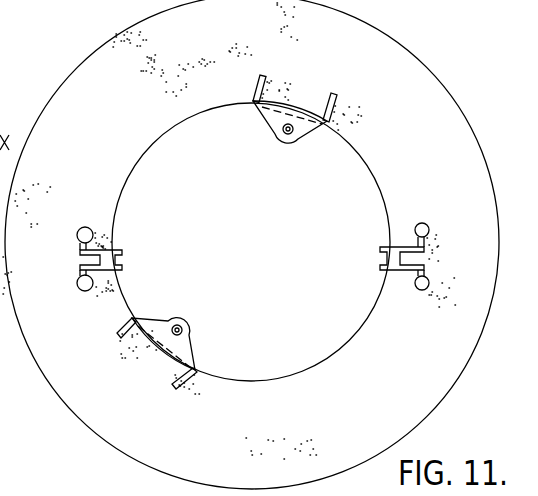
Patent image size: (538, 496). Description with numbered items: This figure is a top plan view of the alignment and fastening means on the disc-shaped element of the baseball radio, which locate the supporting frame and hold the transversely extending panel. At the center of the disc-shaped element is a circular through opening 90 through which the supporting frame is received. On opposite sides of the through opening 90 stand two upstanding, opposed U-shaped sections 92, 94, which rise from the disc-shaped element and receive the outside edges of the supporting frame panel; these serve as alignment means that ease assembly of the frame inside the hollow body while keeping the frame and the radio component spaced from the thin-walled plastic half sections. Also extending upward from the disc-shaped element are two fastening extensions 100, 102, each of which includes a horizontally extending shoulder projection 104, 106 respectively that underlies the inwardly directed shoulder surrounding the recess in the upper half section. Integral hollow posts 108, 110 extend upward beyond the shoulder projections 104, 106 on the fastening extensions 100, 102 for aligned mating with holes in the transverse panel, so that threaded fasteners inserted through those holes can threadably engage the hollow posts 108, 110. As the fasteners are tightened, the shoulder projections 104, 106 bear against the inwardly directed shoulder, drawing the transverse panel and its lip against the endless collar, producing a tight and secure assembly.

The through opening 90 is at (340, 150).
The U-shaped section 92 is at (397, 278).
The U-shaped section 94 is at (106, 243).
The fastening extension 100 is at (176, 353).
The fastening extension 102 is at (287, 100).
The shoulder projection 104 is at (152, 327).
The shoulder projection 106 is at (271, 119).
The hollow post 108 is at (190, 329).
The hollow post 110 is at (288, 138).